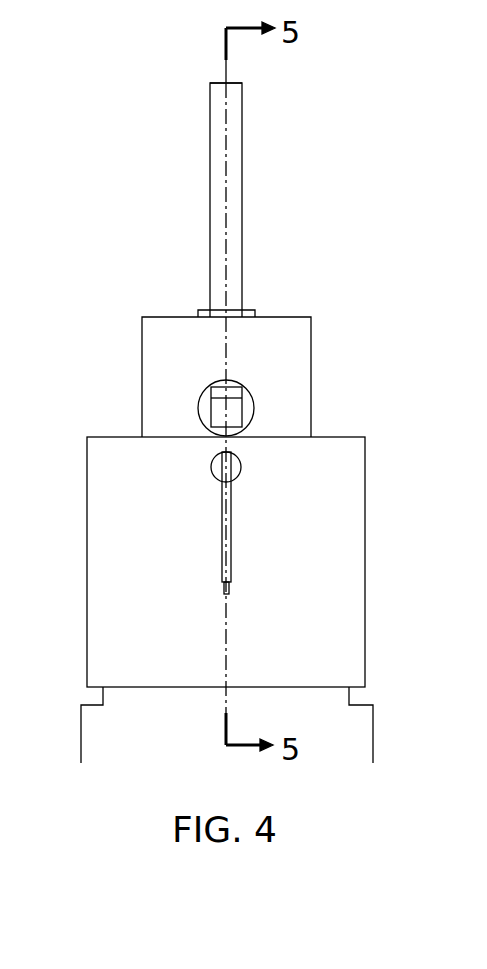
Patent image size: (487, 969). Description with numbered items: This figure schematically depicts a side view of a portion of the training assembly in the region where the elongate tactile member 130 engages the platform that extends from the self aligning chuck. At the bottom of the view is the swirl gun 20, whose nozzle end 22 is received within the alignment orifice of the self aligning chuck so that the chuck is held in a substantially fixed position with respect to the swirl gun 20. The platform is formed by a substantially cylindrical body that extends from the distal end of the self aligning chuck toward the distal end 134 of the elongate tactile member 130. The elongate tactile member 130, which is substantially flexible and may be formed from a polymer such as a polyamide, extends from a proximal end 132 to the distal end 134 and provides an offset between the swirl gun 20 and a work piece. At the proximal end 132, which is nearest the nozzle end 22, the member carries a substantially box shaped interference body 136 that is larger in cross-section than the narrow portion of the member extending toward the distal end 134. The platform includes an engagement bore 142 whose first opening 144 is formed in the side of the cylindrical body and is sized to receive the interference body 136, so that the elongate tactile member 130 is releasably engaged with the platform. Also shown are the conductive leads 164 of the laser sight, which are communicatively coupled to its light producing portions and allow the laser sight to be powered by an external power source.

The swirl gun 20 is at (362, 745).
The nozzle end 22 is at (281, 587).
The elongate tactile member 130 is at (210, 197).
The proximal end 132 is at (248, 377).
The distal end 134 is at (285, 105).
The interference body 136 is at (235, 412).
The engagement bore 142 is at (162, 369).
The first opening 144 is at (247, 392).
The conductive leads 164 is at (232, 547).